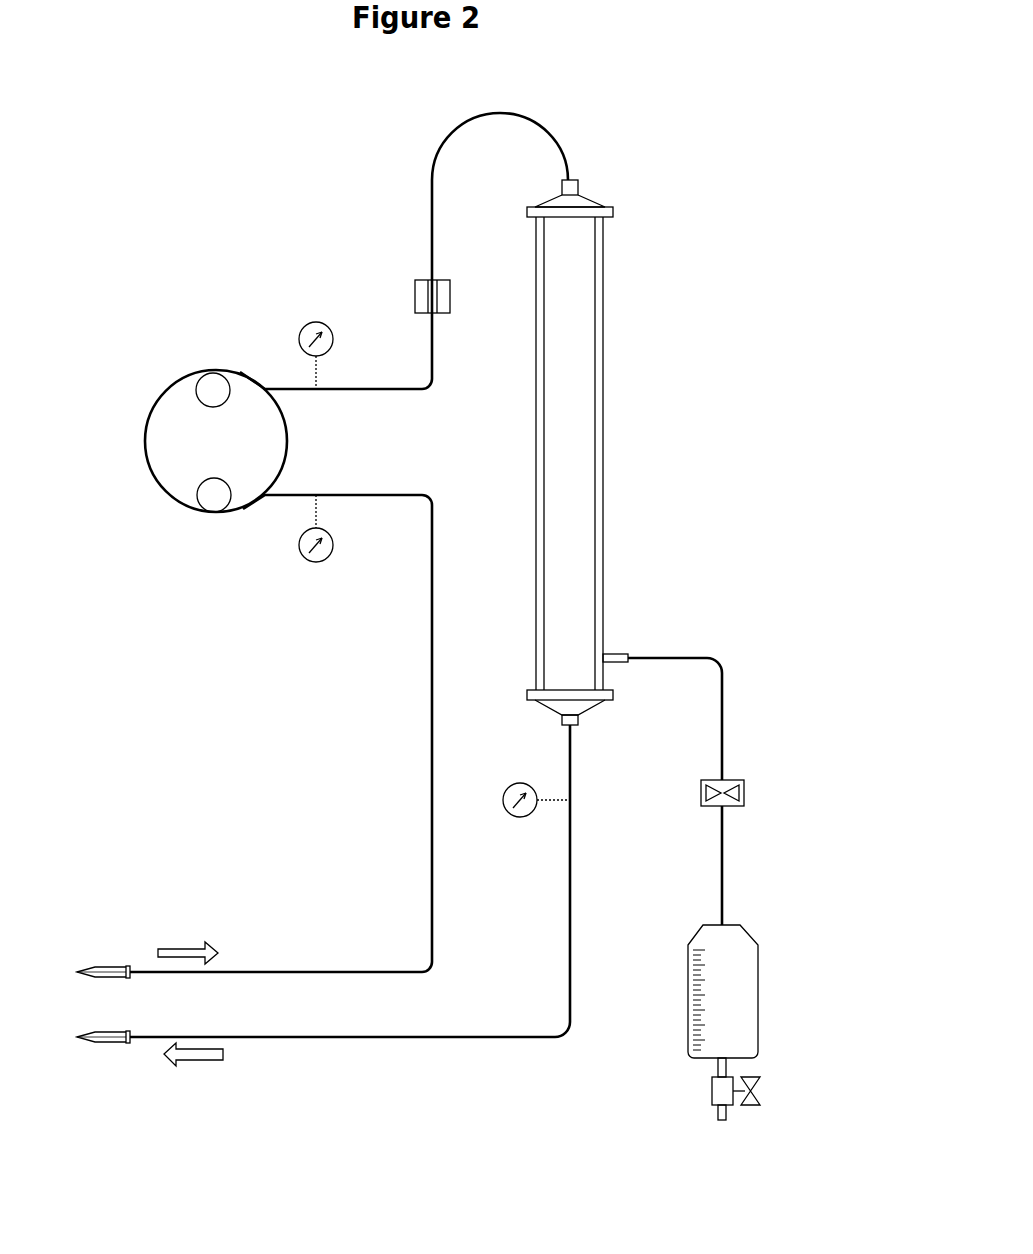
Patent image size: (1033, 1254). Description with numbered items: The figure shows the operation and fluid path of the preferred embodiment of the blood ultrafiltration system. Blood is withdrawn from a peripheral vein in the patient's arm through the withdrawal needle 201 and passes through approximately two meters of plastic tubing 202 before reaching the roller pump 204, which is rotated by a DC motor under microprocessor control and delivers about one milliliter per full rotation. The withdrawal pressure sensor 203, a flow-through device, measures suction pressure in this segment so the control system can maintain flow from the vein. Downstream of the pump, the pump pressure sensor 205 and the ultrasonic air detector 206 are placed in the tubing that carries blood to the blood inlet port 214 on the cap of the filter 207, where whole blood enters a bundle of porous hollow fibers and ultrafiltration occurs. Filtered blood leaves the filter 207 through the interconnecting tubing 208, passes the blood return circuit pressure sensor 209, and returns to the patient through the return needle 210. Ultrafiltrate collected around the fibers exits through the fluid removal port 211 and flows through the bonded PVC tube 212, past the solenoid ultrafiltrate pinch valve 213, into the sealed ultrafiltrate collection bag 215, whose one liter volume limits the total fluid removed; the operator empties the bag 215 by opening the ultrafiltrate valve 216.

The withdrawal needle 201 is at (110, 961).
The plastic tubing 202 is at (313, 961).
The withdrawal pressure sensor 203 is at (297, 553).
The roller pump 204 is at (144, 458).
The pump pressure sensor 205 is at (297, 330).
The air detector 206 is at (413, 265).
The filter 207 is at (585, 347).
The interconnecting tubing 208 is at (572, 858).
The blood return circuit pressure sensor 209 is at (536, 826).
The return needle 210 is at (112, 1062).
The fluid removal port 211 is at (625, 653).
The bonded PVC tube 212 is at (722, 705).
The solenoid ultrafiltrate pinch valve 213 is at (748, 778).
The blood inlet port 214 is at (620, 215).
The ultrafiltrate collection bag 215 is at (738, 948).
The ultrafiltrate valve 216 is at (762, 1087).